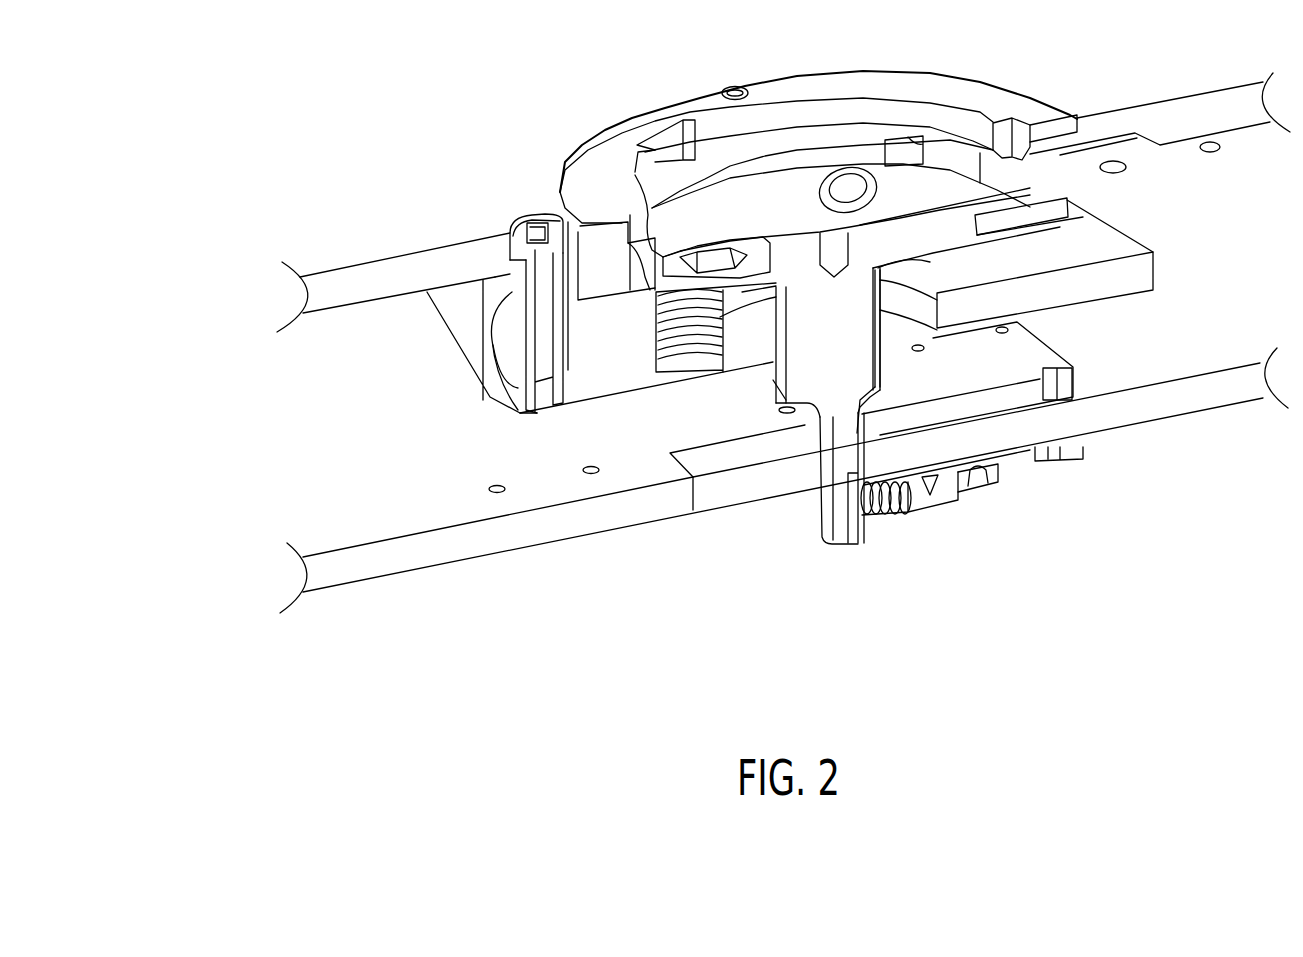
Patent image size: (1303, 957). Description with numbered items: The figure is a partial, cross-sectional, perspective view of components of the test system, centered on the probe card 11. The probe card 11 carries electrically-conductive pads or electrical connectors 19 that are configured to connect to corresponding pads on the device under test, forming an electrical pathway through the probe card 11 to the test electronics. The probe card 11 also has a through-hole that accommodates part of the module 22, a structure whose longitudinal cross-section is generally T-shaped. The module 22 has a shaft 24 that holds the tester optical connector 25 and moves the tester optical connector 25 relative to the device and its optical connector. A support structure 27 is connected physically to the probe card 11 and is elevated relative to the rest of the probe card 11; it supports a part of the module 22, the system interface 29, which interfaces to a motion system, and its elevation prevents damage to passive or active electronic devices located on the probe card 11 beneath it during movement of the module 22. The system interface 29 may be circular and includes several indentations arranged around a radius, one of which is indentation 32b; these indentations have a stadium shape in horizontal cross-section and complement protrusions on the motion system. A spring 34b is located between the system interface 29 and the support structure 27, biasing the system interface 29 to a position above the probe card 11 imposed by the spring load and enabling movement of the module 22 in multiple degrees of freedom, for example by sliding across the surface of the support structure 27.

The probe card 11 is at (237, 244).
The electrical connectors 19 is at (890, 516).
The module 22 is at (817, 388).
The shaft 24 is at (827, 527).
The tester optical connector 25 is at (857, 532).
The support structure 27 is at (1157, 267).
The system interface 29 is at (768, 198).
The indentation 32b is at (847, 175).
The spring 34b is at (687, 353).